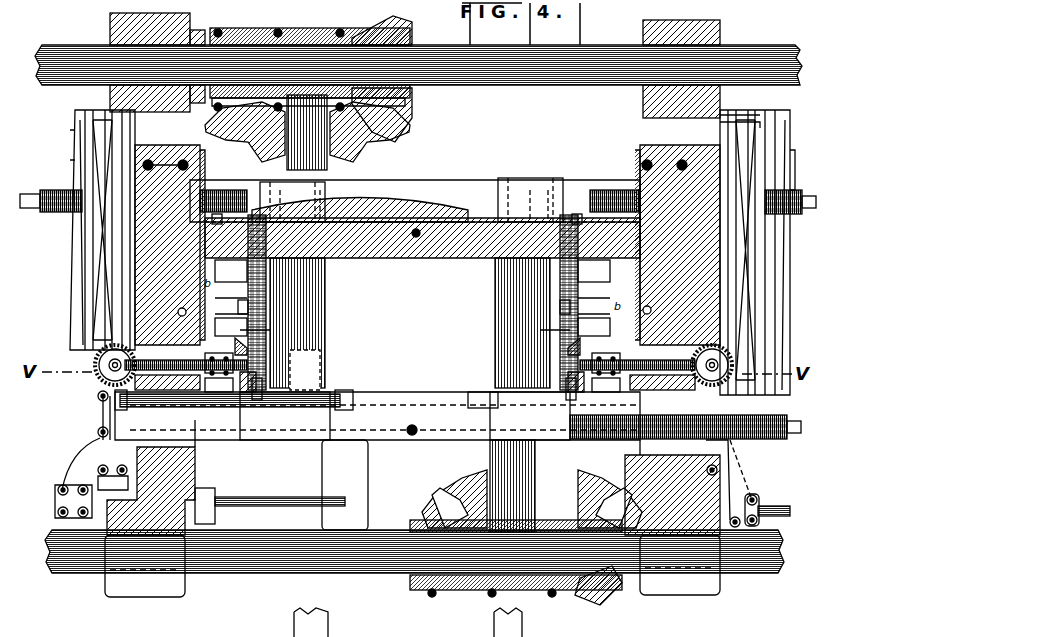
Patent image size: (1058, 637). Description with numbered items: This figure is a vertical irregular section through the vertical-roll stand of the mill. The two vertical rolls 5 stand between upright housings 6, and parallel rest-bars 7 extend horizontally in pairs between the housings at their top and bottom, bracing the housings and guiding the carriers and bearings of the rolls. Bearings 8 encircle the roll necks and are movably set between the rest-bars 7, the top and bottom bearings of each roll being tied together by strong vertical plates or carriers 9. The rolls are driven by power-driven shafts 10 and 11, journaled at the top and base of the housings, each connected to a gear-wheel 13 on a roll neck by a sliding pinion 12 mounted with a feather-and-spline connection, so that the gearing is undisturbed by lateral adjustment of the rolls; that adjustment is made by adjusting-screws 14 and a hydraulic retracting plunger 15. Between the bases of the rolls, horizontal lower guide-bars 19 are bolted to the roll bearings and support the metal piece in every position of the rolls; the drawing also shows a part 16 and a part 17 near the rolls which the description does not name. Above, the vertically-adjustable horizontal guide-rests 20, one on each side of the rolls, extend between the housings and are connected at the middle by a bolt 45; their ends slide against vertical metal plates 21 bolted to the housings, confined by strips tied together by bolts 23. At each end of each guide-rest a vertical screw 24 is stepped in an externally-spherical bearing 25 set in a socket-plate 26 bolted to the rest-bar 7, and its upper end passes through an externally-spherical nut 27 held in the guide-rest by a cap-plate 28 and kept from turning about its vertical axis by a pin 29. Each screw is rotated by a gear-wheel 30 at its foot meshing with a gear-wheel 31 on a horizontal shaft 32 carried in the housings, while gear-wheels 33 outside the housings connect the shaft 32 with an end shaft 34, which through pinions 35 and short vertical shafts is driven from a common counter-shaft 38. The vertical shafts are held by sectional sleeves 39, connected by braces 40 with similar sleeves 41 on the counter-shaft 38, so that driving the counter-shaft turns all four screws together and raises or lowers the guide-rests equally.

The vertical rolls 5 is at (410, 324).
The upright housings 6 is at (150, 252).
The rest-bars 7 is at (377, 310).
The bearings 8 is at (405, 309).
The vertical plates or carriers 9 is at (600, 288).
The power-driven shaft 10 is at (540, 70).
The power-driven shaft 11 is at (298, 560).
The sliding pinions 12 is at (400, 36).
The gear-wheels 13 is at (352, 138).
The adjusting-screws 14 is at (60, 190).
The hydraulic retracting plunger 15 is at (238, 306).
The rod 16 is at (405, 392).
The wedge 17 is at (235, 342).
The lower guide-bars 19 is at (345, 392).
The guide-rests 20 is at (440, 240).
The vertical metal plate 21 is at (205, 326).
The bolts 23 is at (200, 285).
The vertical screw 24 is at (265, 337).
The externally-spherical bearing 25 is at (256, 402).
The socket-plate 26 is at (250, 395).
The externally-spherical nut 27 is at (397, 218).
The follower or cap-plate 28 is at (283, 230).
The pin 29 is at (412, 271).
The gear-wheel 30 is at (412, 395).
The gear-wheel 31 is at (590, 386).
The horizontal shaft 32 is at (415, 392).
The gear-wheels 33 is at (98, 370).
The shaft 34 is at (100, 352).
The pinions 35 is at (98, 396).
The counter-shaft 38 is at (285, 495).
The sectional sleeves 39 is at (407, 458).
The braces 40 is at (760, 490).
The sleeves 41 is at (58, 512).
The bolt 45 is at (416, 240).